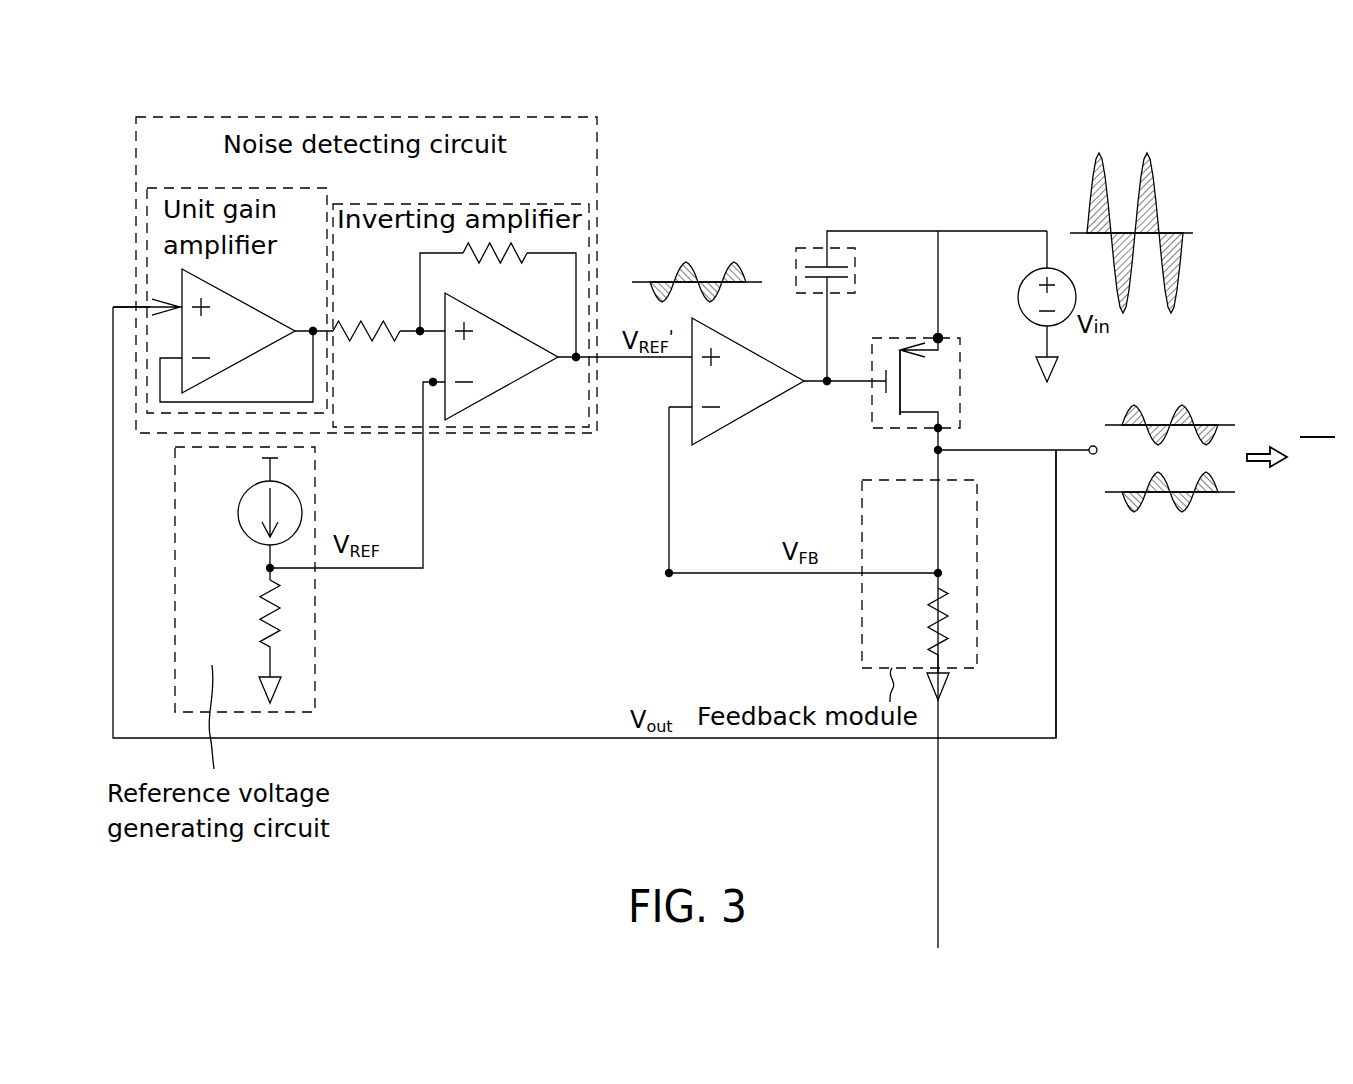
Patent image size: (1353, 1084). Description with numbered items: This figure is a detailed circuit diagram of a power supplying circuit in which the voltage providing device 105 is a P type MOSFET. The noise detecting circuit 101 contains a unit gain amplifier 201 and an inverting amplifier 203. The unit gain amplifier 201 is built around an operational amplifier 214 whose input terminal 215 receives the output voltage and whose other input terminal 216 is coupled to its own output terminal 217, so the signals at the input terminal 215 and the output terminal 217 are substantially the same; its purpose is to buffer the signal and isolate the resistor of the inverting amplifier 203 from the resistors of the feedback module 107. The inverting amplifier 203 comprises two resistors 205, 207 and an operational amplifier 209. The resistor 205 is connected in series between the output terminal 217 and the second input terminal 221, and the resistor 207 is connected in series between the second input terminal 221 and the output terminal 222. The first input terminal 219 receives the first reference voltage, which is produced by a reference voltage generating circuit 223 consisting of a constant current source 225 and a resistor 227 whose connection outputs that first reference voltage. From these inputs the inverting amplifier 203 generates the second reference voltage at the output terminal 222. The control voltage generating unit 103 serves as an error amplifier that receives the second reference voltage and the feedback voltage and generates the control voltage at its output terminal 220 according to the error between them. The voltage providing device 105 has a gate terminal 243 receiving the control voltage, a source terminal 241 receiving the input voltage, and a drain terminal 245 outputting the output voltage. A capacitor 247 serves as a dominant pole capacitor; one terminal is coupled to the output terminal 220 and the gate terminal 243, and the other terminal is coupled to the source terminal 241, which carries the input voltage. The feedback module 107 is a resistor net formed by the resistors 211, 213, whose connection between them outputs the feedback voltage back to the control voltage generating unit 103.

The noise detecting circuit 101 is at (600, 175).
The unit gain amplifier 201 is at (178, 186).
The inverting amplifier 203 is at (549, 202).
The operational amplifier 214 is at (263, 350).
The input terminal 215 is at (122, 307).
The input terminal 216 is at (162, 380).
The output terminal 217 is at (313, 328).
The resistor 205 is at (367, 328).
The resistor 207 is at (503, 262).
The second input terminal 221 is at (418, 340).
The operational amplifier 209 is at (528, 375).
The first input terminal 219 is at (433, 385).
The output terminal 222 is at (577, 362).
The reference voltage generating circuit 223 is at (317, 654).
The constant current source 225 is at (238, 513).
The resistor 227 is at (281, 598).
The control voltage generating unit 103 is at (750, 410).
The output terminal 220 is at (827, 385).
The capacitor 247 is at (797, 272).
The voltage providing device 105 is at (883, 338).
The source terminal 241 is at (938, 336).
The gate terminal 243 is at (876, 425).
The drain terminal 245 is at (940, 428).
The feedback module 107 is at (862, 633).
The resistor 211 is at (946, 514).
The resistor 213 is at (946, 612).